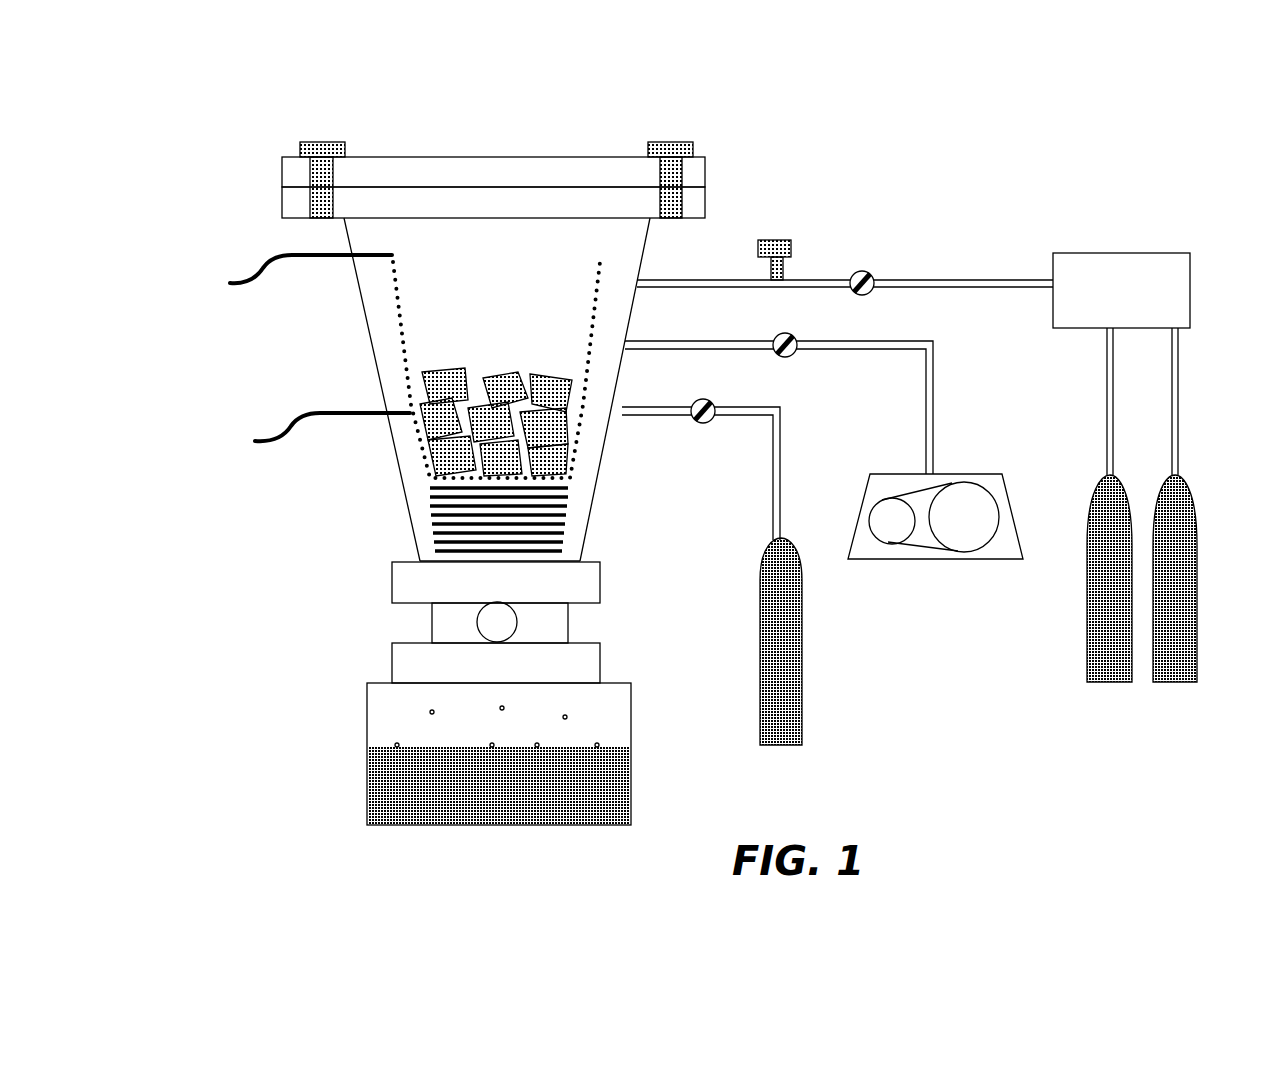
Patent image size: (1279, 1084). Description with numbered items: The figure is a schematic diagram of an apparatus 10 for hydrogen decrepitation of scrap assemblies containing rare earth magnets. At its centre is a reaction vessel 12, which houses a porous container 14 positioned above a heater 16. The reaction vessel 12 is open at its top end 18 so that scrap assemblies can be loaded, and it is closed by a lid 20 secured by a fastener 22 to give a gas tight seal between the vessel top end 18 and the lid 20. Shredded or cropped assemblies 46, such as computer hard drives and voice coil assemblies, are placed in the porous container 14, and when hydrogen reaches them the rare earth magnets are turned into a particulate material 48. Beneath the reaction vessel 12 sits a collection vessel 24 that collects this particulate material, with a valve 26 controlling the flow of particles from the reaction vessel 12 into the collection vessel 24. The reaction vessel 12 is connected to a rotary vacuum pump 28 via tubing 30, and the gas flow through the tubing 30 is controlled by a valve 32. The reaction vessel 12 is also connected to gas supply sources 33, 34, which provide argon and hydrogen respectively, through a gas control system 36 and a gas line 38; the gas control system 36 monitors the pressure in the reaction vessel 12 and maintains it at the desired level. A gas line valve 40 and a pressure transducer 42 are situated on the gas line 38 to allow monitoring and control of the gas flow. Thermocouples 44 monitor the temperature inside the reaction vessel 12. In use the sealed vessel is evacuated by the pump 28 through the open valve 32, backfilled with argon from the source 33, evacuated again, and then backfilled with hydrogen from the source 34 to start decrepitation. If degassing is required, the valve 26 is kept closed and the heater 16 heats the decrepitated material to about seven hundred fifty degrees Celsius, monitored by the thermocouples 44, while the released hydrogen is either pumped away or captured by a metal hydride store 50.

The apparatus 10 is at (996, 78).
The reaction vessel 12 is at (598, 462).
The porous container 14 is at (398, 332).
The heater 16 is at (425, 510).
The top end 18 is at (282, 197).
The lid 20 is at (700, 170).
The fastener 22 is at (683, 143).
The collection vessel 24 is at (634, 781).
The valve 26 is at (512, 624).
The rotary vacuum pump 28 is at (944, 562).
The tubing 30 is at (938, 405).
The valve 32 is at (793, 357).
The gas supply source 33 is at (1192, 630).
The gas supply source 34 is at (1098, 597).
The gas control system 36 is at (1137, 258).
The gas line 38 is at (952, 277).
The gas line valve 40 is at (866, 277).
The pressure transducer 42 is at (796, 243).
The thermocouples 44 is at (247, 278).
The shredded or cropped assemblies 46 is at (428, 385).
The particulate material 48 is at (432, 714).
The metal hydride store 50 is at (804, 690).